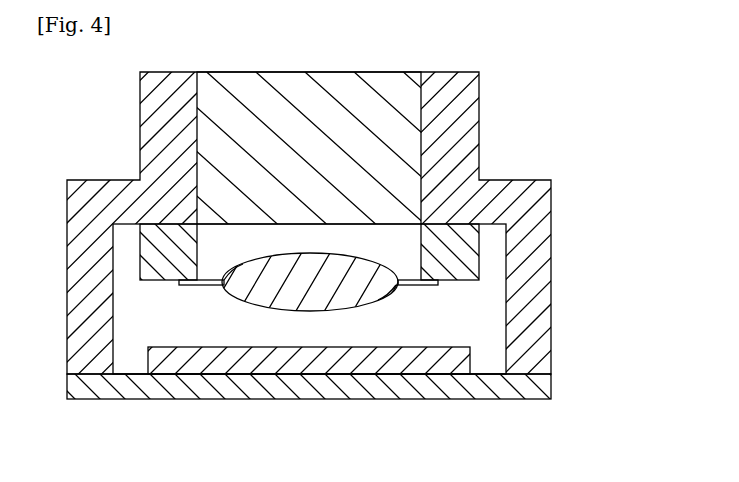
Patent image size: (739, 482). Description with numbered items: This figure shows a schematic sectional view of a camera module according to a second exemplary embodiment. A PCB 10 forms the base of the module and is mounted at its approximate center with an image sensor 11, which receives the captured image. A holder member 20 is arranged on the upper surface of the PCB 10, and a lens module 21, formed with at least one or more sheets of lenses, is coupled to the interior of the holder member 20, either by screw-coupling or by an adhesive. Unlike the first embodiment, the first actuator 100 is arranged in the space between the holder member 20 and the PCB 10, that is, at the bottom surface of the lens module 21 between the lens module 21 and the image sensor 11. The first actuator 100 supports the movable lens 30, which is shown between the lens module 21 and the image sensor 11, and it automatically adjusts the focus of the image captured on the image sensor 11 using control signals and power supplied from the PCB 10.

The PCB 10 is at (262, 398).
The image sensor 11 is at (370, 373).
The holder member 20 is at (477, 112).
The lens module 21 is at (415, 158).
The movable lens 30 is at (438, 283).
The first actuator 100 is at (473, 255).